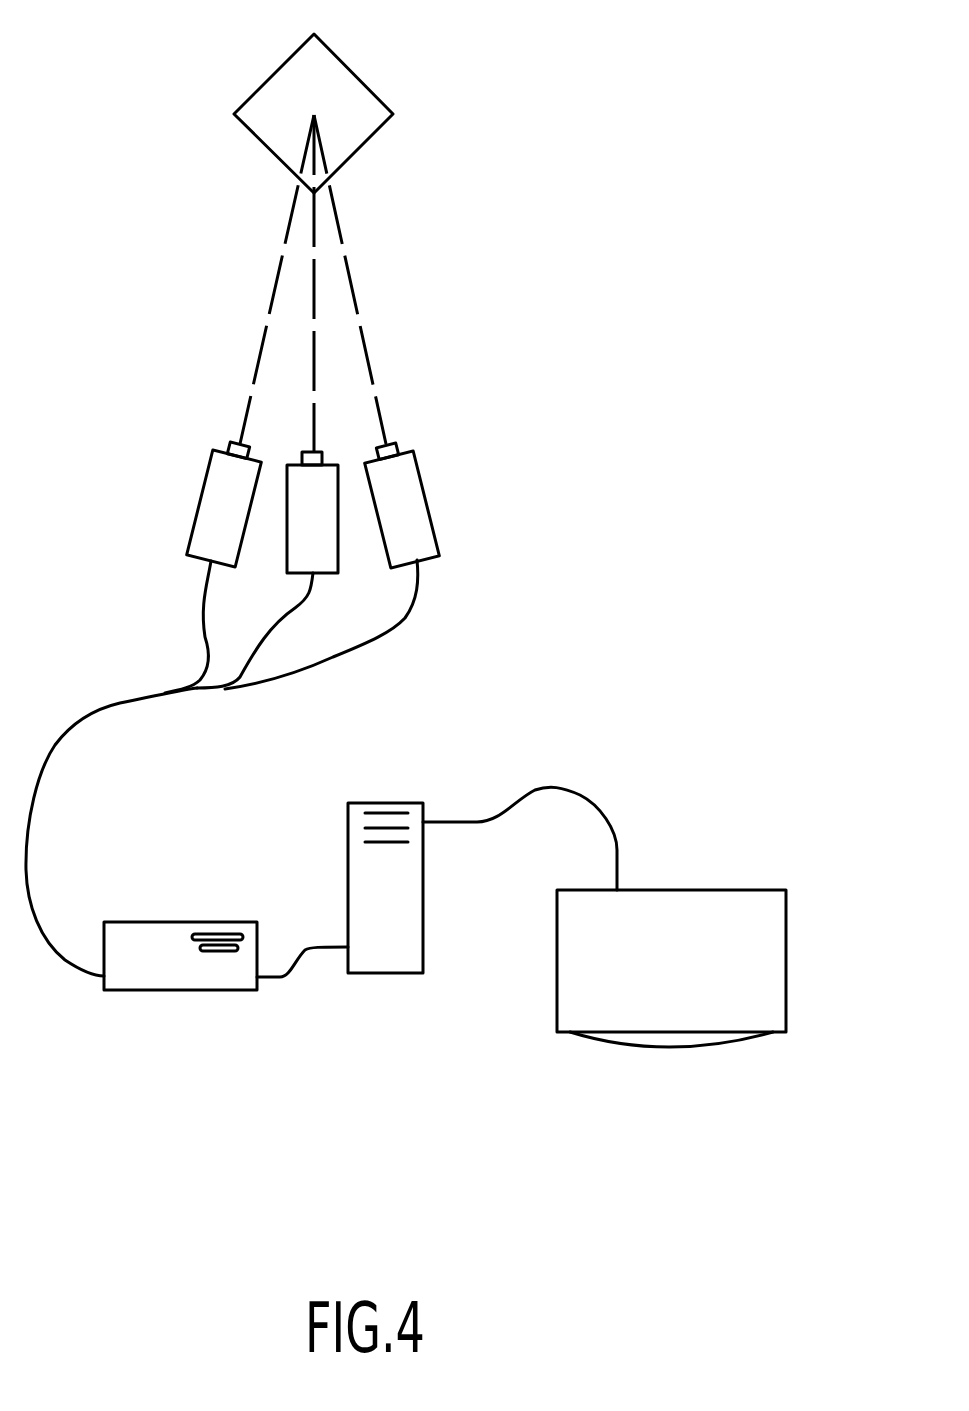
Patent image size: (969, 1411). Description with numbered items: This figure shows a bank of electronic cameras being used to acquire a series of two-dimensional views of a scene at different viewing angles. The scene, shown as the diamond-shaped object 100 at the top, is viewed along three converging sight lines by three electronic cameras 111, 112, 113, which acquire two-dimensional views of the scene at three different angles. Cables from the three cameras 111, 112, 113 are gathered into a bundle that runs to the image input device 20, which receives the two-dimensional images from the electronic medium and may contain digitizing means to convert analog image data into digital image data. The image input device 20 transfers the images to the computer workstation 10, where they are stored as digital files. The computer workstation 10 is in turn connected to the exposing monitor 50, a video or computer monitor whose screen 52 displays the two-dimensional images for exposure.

The target object 100 is at (348, 86).
The electronic camera 111 is at (203, 541).
The electronic camera 112 is at (322, 568).
The electronic camera 113 is at (427, 545).
The image input device 20 is at (130, 930).
The computer workstation 10 is at (410, 938).
The exposing monitor 50 is at (767, 900).
The screen 52 is at (690, 1038).